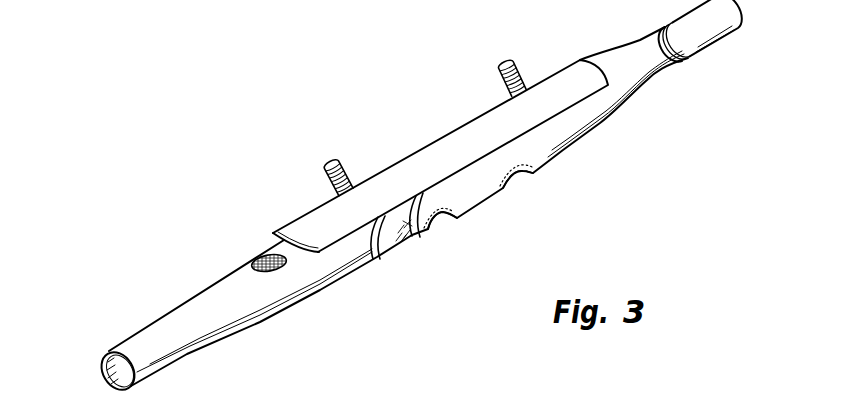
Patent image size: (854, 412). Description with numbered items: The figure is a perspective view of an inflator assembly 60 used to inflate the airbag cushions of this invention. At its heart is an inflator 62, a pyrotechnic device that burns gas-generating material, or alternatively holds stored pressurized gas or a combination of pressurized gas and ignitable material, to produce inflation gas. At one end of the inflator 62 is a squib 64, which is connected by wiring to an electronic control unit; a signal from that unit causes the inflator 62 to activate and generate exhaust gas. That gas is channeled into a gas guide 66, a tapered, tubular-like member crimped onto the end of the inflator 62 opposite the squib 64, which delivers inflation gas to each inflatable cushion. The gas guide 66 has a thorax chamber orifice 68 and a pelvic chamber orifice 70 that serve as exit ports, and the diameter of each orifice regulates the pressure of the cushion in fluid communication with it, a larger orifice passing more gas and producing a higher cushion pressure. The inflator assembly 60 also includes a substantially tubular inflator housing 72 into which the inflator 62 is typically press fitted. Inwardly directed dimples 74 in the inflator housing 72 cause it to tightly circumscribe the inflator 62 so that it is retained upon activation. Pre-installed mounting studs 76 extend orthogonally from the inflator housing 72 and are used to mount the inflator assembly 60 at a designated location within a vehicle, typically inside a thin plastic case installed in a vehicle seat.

The inflator assembly 60 is at (223, 152).
The inflator 62 is at (592, 115).
The squib 64 is at (705, 35).
The gas guide 66 is at (257, 300).
The thorax chamber orifice 68 is at (268, 257).
The pelvic chamber orifice 70 is at (100, 377).
The inflator housing 72 is at (478, 200).
The dimples 74 is at (442, 224).
The mounting studs 76 is at (500, 63).